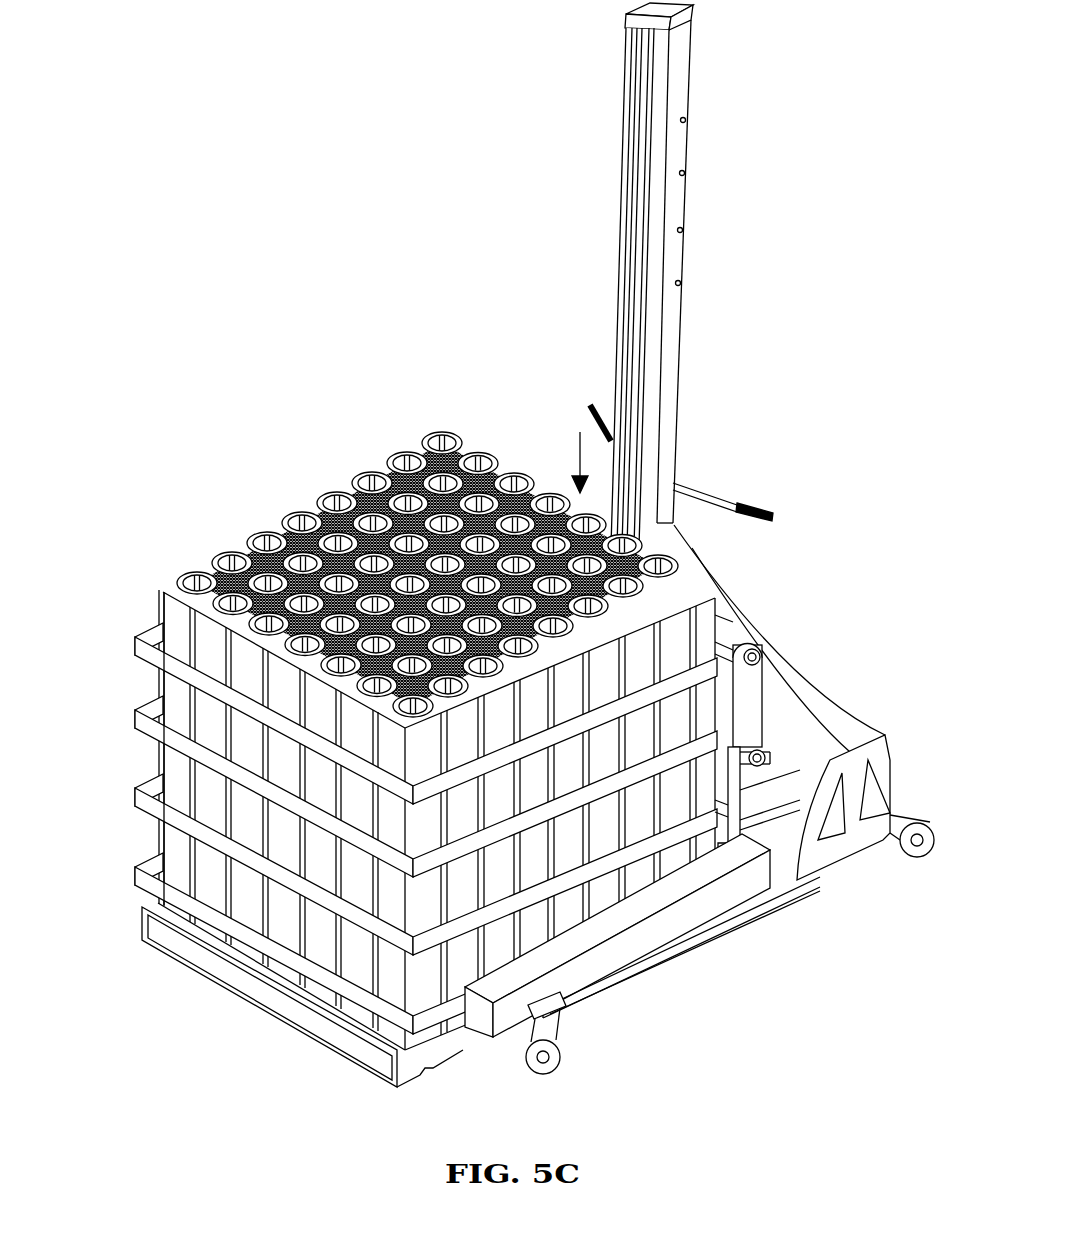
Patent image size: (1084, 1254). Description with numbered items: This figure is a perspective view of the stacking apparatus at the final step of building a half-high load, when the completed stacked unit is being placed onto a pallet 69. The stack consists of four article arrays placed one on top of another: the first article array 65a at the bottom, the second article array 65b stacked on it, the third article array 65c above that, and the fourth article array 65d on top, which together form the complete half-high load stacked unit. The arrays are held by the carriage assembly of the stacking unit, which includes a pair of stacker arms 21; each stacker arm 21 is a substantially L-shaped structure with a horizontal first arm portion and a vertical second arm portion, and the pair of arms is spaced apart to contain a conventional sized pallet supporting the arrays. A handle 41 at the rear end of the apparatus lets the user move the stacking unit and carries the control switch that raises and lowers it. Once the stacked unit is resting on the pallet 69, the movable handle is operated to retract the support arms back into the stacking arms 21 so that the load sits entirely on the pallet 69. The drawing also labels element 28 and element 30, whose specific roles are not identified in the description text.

The stacker arm 21 is at (657, 950).
The fork beam 28 is at (478, 1052).
The mast 30 is at (690, 283).
The handle 41 is at (718, 493).
The first article array 65a is at (123, 855).
The second article array 65b is at (128, 776).
The third article array 65c is at (133, 698).
The fourth article array 65d is at (145, 618).
The pallet 69 is at (167, 955).